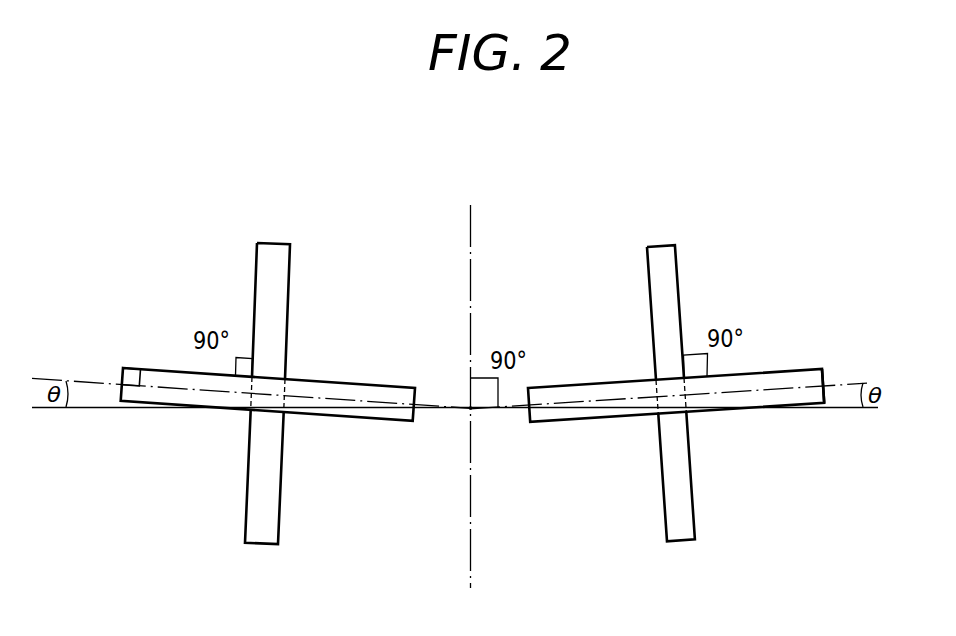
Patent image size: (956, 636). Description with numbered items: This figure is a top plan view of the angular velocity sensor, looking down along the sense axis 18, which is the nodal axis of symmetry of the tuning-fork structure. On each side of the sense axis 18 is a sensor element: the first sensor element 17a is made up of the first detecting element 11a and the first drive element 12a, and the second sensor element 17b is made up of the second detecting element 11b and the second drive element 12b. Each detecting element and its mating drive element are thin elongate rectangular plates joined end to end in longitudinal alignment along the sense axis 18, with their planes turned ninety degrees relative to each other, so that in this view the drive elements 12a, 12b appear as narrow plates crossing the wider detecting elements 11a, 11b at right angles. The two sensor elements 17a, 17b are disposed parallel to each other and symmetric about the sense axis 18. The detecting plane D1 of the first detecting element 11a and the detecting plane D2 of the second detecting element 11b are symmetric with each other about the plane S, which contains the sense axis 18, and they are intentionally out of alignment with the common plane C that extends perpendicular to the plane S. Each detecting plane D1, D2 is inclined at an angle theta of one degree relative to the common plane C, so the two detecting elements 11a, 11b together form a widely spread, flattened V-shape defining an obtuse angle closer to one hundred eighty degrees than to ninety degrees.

The first detecting element 11a is at (798, 371).
The second detecting element 11b is at (343, 383).
The first drive element 12a is at (669, 256).
The second drive element 12b is at (264, 267).
The first sensor element 17a is at (757, 200).
The second sensor element 17b is at (367, 205).
The sense axis 18 is at (470, 410).
The plane S is at (472, 240).
The common plane C is at (365, 410).
The detecting plane D1 is at (758, 397).
The detecting plane D2 is at (138, 380).